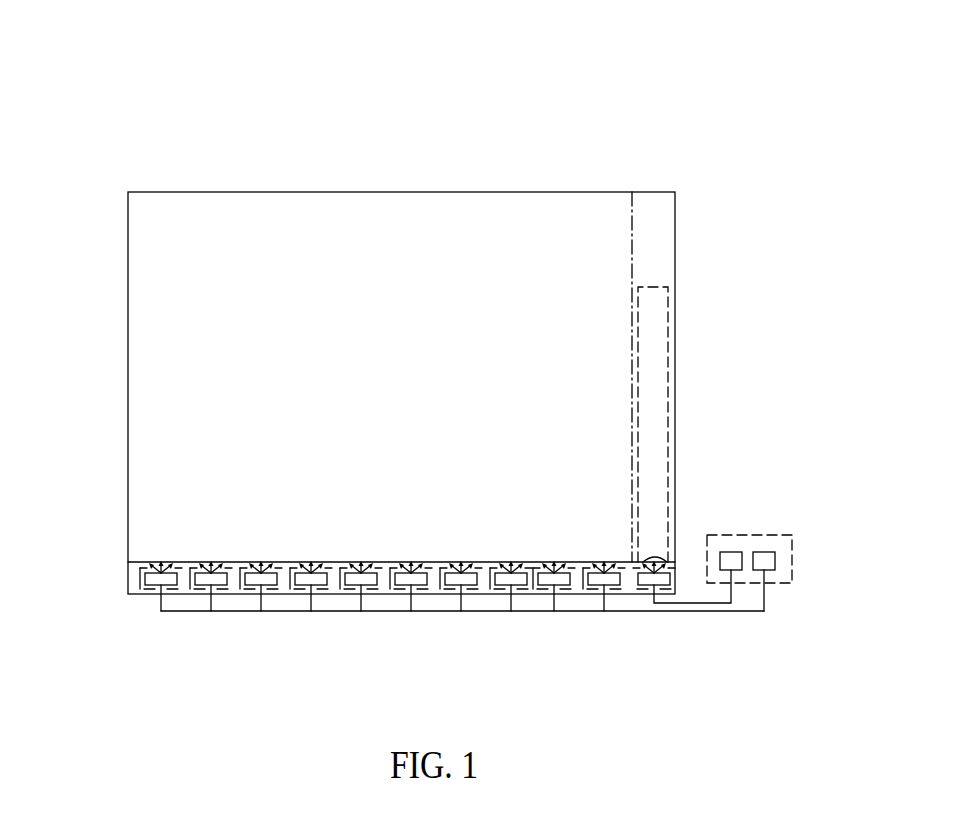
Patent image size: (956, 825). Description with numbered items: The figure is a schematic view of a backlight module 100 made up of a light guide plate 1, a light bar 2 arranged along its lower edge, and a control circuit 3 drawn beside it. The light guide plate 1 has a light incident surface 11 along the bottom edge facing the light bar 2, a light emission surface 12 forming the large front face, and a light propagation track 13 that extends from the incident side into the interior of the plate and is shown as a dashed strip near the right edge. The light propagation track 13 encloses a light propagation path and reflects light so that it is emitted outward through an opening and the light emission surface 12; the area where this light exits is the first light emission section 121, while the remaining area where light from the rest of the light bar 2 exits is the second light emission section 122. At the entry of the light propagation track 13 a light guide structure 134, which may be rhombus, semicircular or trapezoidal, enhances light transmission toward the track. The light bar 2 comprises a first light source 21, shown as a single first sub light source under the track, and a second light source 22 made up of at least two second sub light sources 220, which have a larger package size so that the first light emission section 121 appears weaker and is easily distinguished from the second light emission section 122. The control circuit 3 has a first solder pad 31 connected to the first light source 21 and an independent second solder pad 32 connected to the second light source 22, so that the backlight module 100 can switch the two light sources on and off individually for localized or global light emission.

The backlight module 100 is at (326, 70).
The light guide plate 1 is at (268, 192).
The light incident surface 11 is at (227, 560).
The light emission surface 12 is at (590, 135).
The first light emission section 121 is at (660, 300).
The second light emission section 122 is at (510, 228).
The light propagation track 13 is at (668, 387).
The light guide structure 134 is at (665, 560).
The light bar 2 is at (138, 570).
The first light source 21 is at (647, 578).
The second light source 22 is at (255, 588).
The second sub light source 220 is at (402, 577).
The control circuit 3 is at (795, 470).
The first solder pad 31 is at (729, 552).
The second solder pad 32 is at (770, 552).